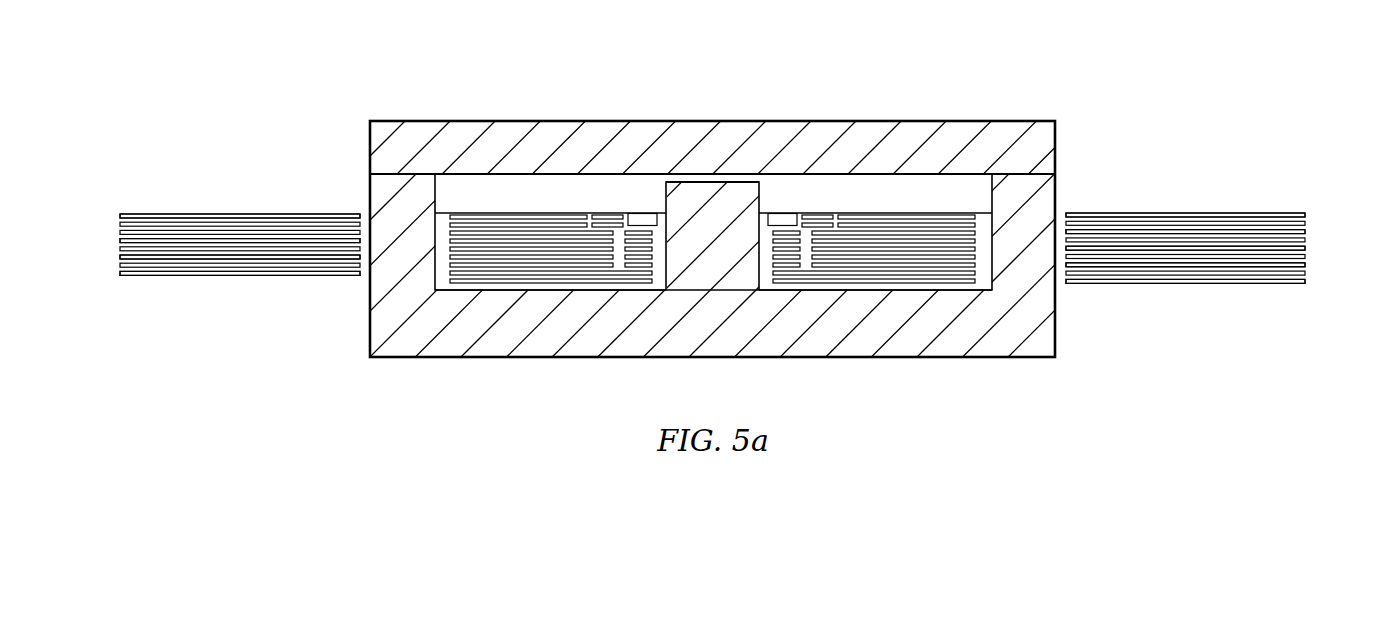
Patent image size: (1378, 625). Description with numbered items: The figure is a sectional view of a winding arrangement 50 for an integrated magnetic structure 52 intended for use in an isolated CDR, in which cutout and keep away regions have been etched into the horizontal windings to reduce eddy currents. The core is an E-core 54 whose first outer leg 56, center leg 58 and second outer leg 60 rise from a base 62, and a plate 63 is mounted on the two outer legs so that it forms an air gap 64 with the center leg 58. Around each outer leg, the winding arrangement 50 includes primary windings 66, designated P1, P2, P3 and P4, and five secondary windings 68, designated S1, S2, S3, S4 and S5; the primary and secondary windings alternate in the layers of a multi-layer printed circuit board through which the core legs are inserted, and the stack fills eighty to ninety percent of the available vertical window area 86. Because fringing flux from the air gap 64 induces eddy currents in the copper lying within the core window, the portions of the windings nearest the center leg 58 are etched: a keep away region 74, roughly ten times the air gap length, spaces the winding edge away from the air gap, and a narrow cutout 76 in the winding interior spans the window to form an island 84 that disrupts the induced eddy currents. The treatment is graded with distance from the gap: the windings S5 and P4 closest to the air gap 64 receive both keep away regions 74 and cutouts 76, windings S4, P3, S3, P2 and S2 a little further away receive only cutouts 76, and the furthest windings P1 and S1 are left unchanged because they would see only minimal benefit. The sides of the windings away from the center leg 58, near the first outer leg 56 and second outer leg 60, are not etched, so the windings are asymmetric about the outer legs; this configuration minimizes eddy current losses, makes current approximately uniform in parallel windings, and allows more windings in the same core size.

The winding arrangement 50 is at (1127, 201).
The integrated magnetic structure 52 is at (712, 226).
The E-core 54 is at (448, 371).
The first outer leg 56 is at (376, 296).
The center leg 58 is at (710, 233).
The second outer leg 60 is at (1054, 293).
The base 62 is at (712, 347).
The plate 63 is at (518, 121).
The air gap 64 is at (713, 180).
The primary windings 66 is at (122, 200).
The secondary windings 68 is at (1286, 201).
The keep away region 74 is at (648, 222).
The cutout 76 is at (590, 214).
The island 84 is at (607, 213).
The vertical window area 86 is at (466, 197).
The primary winding P1 is at (120, 273).
The primary winding P2 is at (120, 257).
The primary winding P3 is at (120, 241).
The primary winding P4 is at (120, 216).
The secondary winding S1 is at (1293, 284).
The secondary winding S2 is at (1305, 265).
The secondary winding S3 is at (1305, 249).
The secondary winding S4 is at (1305, 233).
The secondary winding S5 is at (1305, 215).